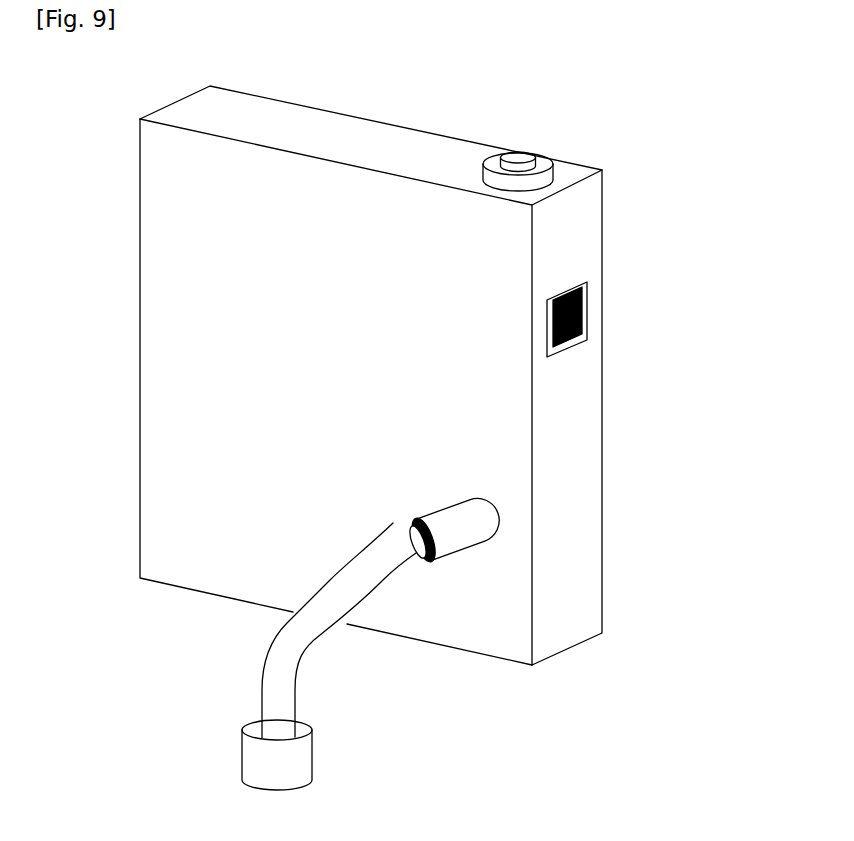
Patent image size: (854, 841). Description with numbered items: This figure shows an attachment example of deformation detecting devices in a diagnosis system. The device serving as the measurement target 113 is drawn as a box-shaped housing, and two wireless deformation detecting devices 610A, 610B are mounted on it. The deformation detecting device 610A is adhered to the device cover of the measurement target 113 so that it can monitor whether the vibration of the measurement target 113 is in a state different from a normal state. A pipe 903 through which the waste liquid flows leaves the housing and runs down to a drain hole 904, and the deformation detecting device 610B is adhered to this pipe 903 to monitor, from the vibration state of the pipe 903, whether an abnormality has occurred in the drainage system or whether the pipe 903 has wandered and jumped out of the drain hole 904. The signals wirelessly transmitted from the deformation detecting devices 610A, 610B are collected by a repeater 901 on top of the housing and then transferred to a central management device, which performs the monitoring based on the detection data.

The measurement target 113 is at (152, 347).
The repeater 901 is at (518, 152).
The deformation detecting device 610A is at (578, 310).
The deformation detecting device 610B is at (440, 537).
The pipe 903 is at (270, 682).
The drain hole 904 is at (302, 764).